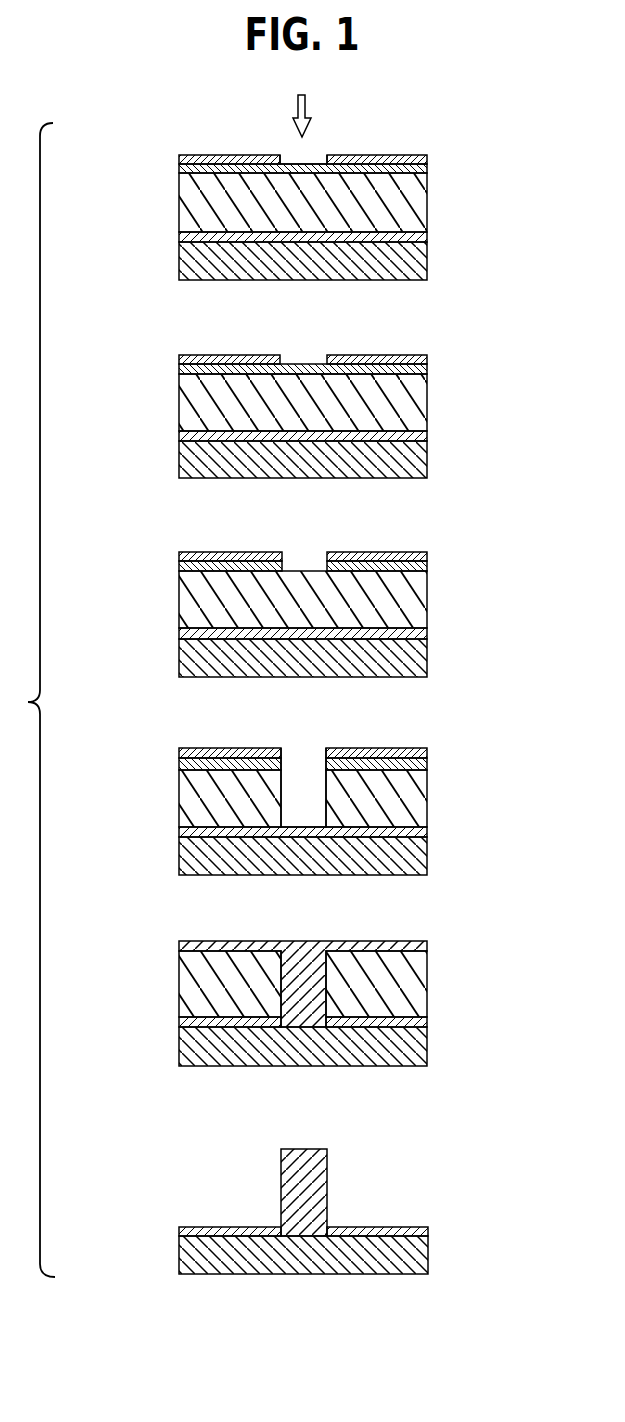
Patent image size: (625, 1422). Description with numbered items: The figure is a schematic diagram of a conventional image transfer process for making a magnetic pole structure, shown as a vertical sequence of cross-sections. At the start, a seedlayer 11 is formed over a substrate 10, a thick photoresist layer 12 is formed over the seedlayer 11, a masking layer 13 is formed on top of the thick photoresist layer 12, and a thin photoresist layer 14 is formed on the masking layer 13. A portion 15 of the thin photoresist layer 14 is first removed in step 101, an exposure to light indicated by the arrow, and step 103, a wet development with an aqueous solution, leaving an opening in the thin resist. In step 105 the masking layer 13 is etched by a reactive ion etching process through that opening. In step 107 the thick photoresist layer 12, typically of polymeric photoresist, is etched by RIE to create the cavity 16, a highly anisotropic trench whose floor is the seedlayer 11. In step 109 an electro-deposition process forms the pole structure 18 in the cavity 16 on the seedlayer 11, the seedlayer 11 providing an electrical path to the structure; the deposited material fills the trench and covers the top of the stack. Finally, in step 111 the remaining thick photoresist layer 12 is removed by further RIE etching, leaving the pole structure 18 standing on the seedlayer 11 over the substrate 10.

The substrate 10 is at (427, 265).
The seedlayer 11 is at (427, 237).
The thick photoresist layer 12 is at (427, 193).
The masking layer 13 is at (179, 169).
The thin photoresist layer 14 is at (179, 157).
The portion of thin resist layer 15 is at (313, 154).
The cavity 16 is at (317, 748).
The pole structure 18 is at (317, 941).
The exposure step 101 is at (135, 234).
The wet development step 103 is at (136, 395).
The mask layer etching step 105 is at (137, 588).
The thick layer etching step 107 is at (136, 783).
The electro-deposition step 109 is at (137, 978).
The thick photoresist removal step 111 is at (137, 1172).